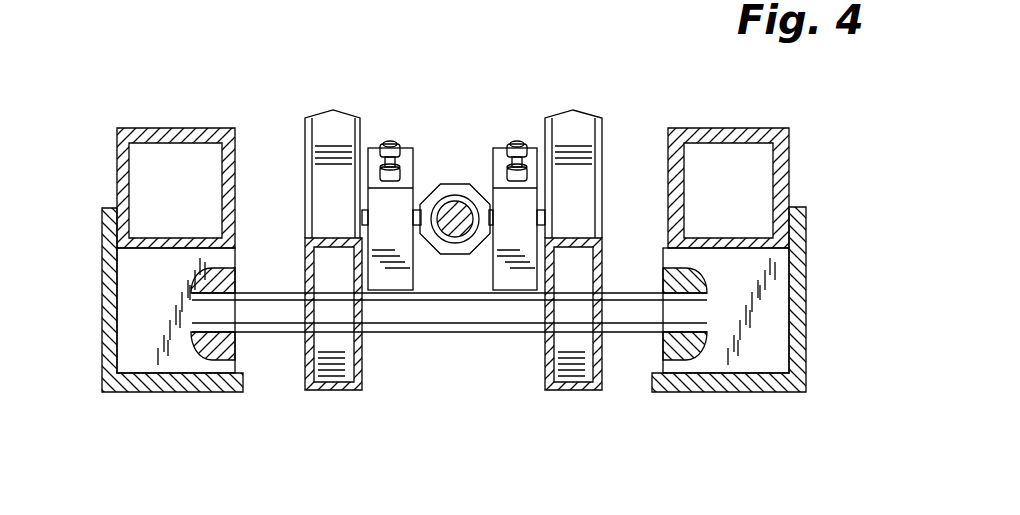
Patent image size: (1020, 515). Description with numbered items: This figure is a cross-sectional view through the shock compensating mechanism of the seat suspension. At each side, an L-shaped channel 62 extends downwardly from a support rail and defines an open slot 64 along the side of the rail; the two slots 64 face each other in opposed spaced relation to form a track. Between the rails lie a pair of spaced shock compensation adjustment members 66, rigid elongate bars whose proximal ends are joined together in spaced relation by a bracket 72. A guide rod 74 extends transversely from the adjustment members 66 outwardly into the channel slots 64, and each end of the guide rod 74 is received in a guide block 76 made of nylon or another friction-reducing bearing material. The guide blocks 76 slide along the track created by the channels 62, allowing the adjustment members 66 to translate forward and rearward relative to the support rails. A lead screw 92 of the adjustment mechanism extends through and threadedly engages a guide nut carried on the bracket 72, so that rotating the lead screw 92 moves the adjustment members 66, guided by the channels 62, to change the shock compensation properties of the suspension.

The L-shaped channel 62 is at (102, 287).
The open slot 64 is at (148, 385).
The shock compensation adjustment member 66 is at (330, 390).
The bracket 72 is at (415, 141).
The guide rod 74 is at (398, 307).
The guide block 76 is at (170, 340).
The lead screw 92 is at (455, 197).